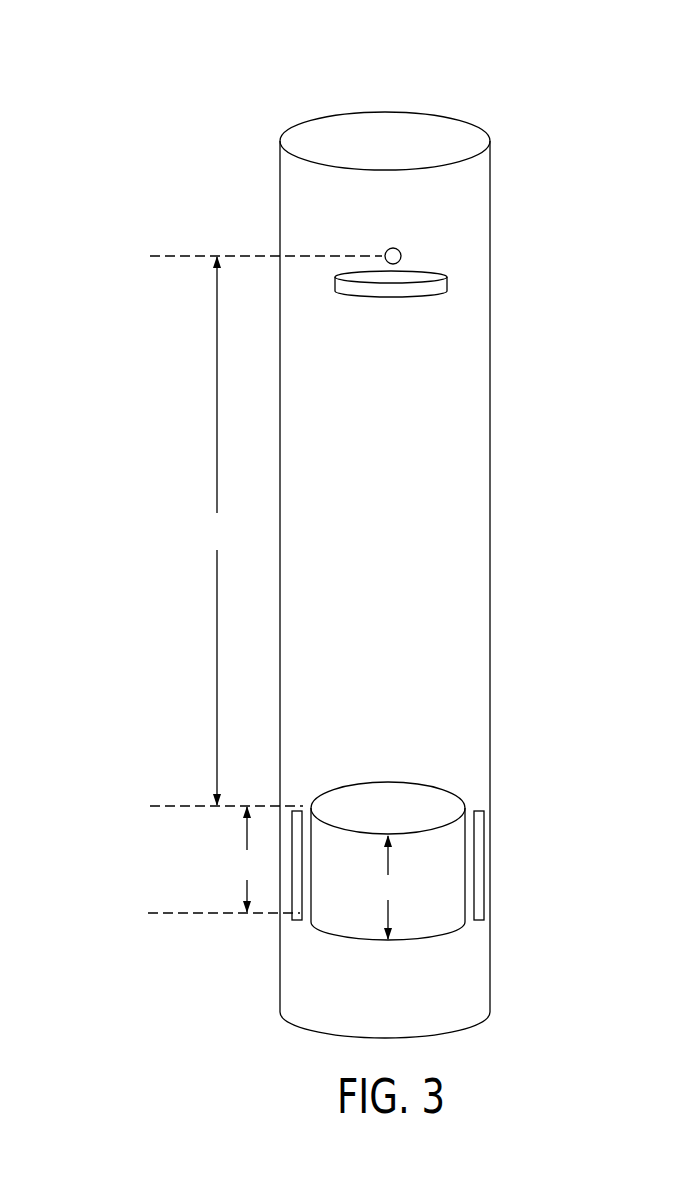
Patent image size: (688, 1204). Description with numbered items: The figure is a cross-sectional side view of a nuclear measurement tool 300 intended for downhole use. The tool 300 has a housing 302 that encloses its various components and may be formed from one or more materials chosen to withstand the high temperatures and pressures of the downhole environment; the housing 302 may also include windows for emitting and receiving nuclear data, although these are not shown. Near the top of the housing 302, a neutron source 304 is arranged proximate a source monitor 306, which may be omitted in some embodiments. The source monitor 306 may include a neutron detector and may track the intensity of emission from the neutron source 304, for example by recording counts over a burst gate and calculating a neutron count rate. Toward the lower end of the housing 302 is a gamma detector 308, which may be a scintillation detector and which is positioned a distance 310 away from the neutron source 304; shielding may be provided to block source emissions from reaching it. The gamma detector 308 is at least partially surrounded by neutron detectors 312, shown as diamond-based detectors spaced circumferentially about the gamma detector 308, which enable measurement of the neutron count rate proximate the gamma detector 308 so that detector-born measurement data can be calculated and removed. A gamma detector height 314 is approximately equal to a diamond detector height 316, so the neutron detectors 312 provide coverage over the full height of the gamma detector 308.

The nuclear measurement tool 300 is at (174, 146).
The housing 302 is at (446, 117).
The neutron source 304 is at (414, 242).
The source monitor 306 is at (442, 310).
The gamma detector 308 is at (388, 781).
The distance 310 is at (266, 531).
The neutron detectors 312 is at (303, 883).
The gamma detector height 314 is at (390, 887).
The diamond detector height 316 is at (224, 860).